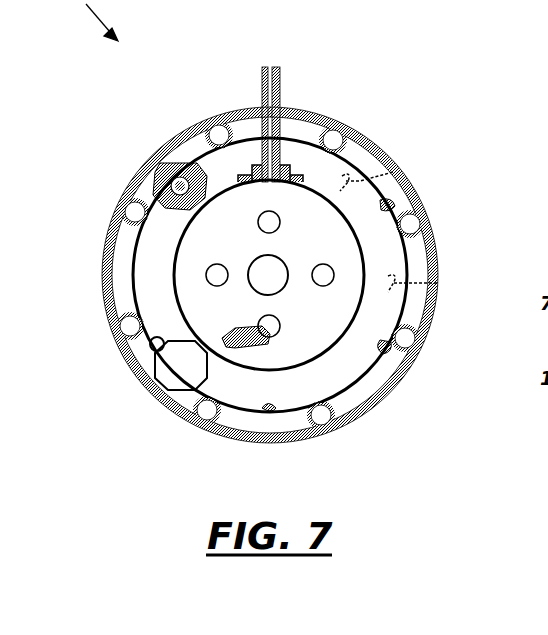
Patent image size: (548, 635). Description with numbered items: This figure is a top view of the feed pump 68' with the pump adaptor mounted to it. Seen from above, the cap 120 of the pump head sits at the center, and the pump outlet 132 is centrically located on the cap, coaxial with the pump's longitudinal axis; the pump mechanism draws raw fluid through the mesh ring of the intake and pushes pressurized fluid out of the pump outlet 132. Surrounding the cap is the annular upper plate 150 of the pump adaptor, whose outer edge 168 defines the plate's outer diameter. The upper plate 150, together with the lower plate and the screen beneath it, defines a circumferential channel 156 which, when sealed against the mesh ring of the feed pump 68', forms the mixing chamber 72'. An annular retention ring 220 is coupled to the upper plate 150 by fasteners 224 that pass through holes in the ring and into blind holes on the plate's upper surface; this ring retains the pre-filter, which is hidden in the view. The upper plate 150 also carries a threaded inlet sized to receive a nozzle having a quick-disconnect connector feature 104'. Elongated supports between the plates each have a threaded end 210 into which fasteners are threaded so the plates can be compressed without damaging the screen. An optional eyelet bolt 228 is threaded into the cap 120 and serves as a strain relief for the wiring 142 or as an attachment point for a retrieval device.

The annular retention ring 220 is at (189, 119).
The fasteners 224 is at (222, 124).
The wiring 142 is at (279, 82).
The circumferential channel 156 is at (397, 172).
The cap 120 is at (310, 222).
The quick-disconnect connector feature 104' is at (138, 164).
The pump outlet 132 is at (282, 260).
The mixing chamber 72' is at (445, 275).
The upper plate 150 is at (386, 311).
The feed pump 68' is at (236, 275).
The eyelet bolt 228 is at (233, 330).
The outer edge 168 is at (172, 403).
The end 210 is at (277, 403).